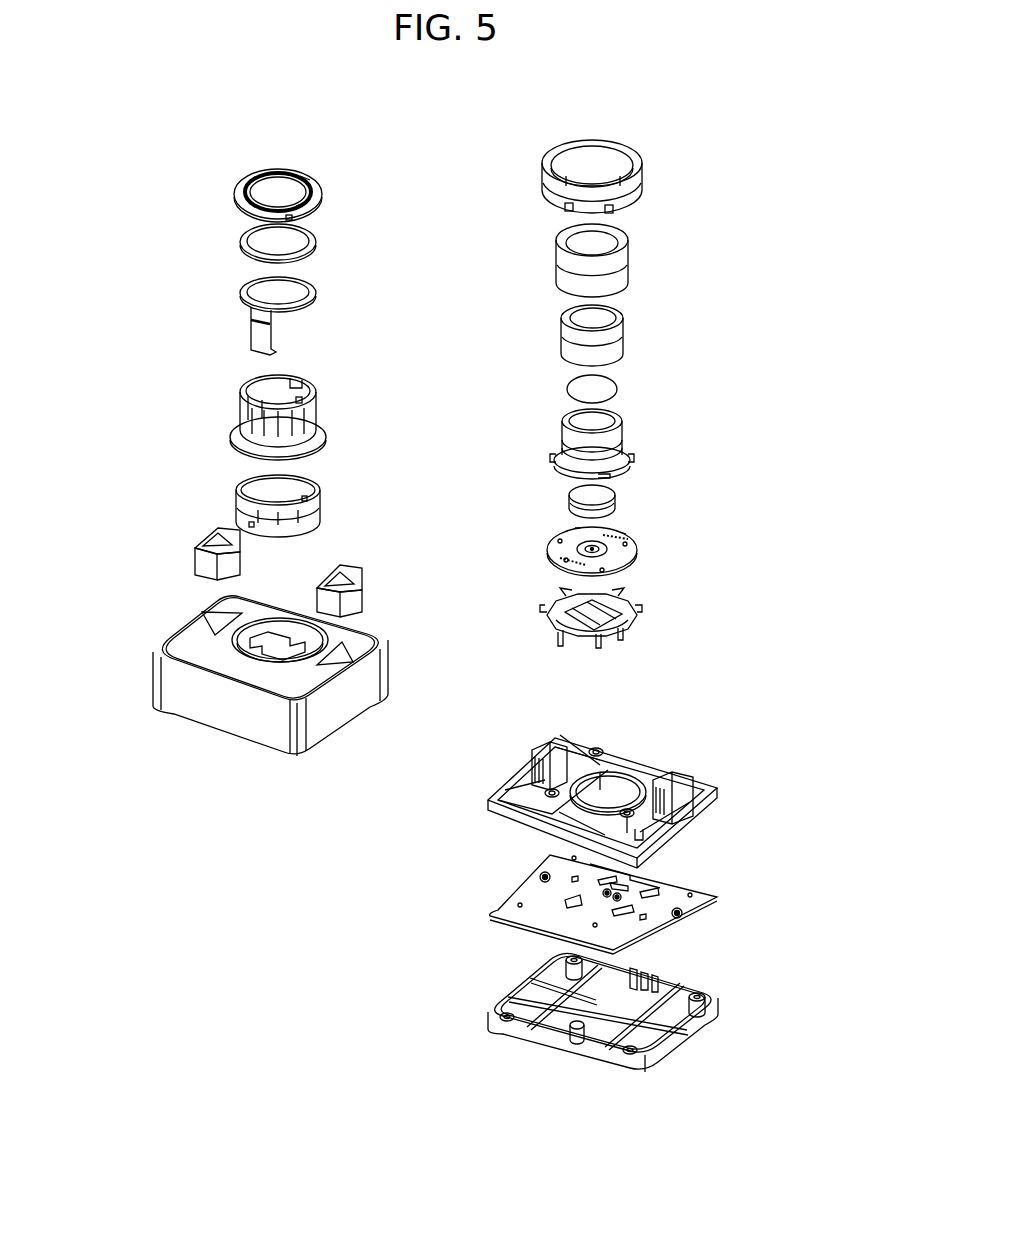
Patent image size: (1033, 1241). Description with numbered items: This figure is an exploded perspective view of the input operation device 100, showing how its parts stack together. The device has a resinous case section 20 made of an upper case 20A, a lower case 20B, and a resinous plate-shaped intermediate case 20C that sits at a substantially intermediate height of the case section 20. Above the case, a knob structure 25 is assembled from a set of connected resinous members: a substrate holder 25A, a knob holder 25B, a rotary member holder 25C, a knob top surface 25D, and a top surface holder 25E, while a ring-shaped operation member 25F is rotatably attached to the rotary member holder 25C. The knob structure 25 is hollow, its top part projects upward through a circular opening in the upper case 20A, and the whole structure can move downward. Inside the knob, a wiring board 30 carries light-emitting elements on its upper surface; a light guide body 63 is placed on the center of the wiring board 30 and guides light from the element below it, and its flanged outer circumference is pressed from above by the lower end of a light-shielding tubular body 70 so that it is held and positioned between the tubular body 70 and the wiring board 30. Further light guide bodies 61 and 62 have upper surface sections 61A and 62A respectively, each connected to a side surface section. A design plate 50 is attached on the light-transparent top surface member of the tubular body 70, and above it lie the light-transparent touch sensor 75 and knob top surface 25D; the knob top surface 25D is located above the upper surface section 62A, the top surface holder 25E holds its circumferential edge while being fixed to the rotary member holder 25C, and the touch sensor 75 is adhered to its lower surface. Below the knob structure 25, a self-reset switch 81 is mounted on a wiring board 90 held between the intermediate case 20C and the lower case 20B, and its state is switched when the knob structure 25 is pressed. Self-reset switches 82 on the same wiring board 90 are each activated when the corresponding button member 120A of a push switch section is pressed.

The input operation device 100 is at (677, 108).
The knob structure 25 is at (497, 421).
The substrate holder 25A is at (617, 628).
The knob holder 25B is at (620, 195).
The rotary member holder 25C is at (317, 432).
The knob top surface 25D is at (310, 257).
The top surface holder 25E is at (325, 198).
The ring-shaped operation member 25F is at (318, 512).
The touch sensor 75 is at (285, 298).
The upper surface section of light guide body 62 62A is at (603, 243).
The light guide body 62 is at (617, 273).
The upper surface section of light guide body 61 61A is at (607, 318).
The light guide body 61 is at (610, 353).
The design plate 50 is at (618, 390).
The tubular body 70 is at (622, 447).
The light guide body 63 is at (597, 507).
The wiring board 30 is at (602, 557).
The button member 120A is at (192, 562).
The case section 20 is at (425, 871).
The upper case 20A is at (193, 705).
The intermediate case 20C is at (523, 812).
The lower case 20B is at (525, 1037).
The wiring board 90 is at (648, 942).
The self-reset switch 81 is at (608, 893).
The self-reset switch 82 is at (540, 877).